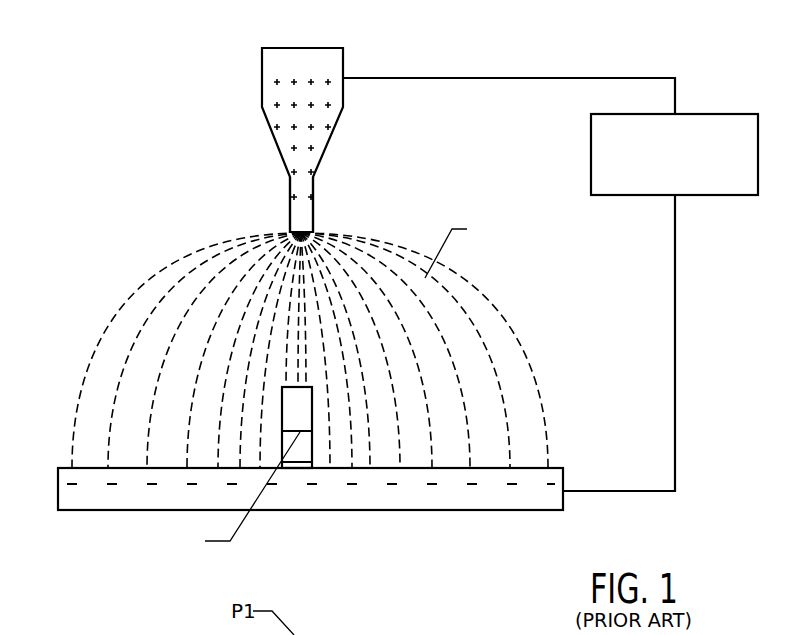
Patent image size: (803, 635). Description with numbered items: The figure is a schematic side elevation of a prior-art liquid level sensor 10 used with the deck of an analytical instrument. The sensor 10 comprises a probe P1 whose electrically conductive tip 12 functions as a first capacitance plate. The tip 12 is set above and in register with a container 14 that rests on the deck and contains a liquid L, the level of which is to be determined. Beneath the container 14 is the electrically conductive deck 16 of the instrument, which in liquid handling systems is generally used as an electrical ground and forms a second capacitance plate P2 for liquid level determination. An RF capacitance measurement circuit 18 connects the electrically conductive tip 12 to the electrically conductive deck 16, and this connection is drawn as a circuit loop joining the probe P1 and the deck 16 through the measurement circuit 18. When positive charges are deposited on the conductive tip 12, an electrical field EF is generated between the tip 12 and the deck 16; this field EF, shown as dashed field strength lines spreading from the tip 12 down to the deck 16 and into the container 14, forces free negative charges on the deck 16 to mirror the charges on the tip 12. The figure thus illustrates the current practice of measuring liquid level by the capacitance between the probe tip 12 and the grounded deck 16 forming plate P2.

The liquid level sensor 10 is at (430, 186).
The electrically conductive tip 12 is at (307, 221).
The container 14 is at (303, 408).
The electrically conductive deck 16 is at (559, 495).
The RF capacitance measurement circuit 18 is at (590, 156).
The probe P1 is at (301, 47).
The second capacitance plate P2 is at (435, 511).
The electrical field EF is at (205, 329).
The liquid L is at (303, 448).